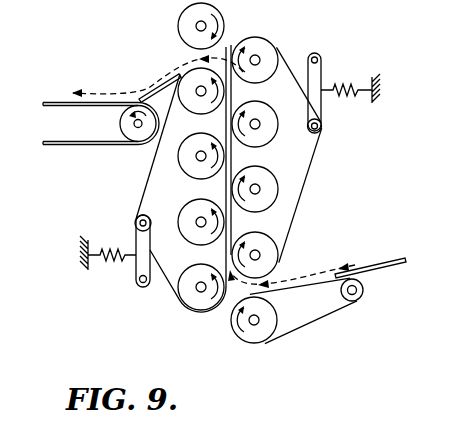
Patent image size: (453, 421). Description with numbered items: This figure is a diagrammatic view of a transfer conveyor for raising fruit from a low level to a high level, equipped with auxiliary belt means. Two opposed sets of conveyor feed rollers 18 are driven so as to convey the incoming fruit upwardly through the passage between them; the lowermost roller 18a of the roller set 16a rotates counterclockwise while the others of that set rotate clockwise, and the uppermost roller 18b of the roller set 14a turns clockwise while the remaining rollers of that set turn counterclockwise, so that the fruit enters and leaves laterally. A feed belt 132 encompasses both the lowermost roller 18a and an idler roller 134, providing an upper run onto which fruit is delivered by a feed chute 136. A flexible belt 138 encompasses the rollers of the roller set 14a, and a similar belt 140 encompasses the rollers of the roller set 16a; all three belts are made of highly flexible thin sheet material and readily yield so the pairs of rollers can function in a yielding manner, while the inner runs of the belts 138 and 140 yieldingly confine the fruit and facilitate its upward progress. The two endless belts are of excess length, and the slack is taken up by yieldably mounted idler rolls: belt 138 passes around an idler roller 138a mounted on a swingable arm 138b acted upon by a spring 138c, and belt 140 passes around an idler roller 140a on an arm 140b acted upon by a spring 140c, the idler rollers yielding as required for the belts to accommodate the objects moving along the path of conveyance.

The uppermost roller 18b is at (178, 31).
The roller set 16a is at (281, 38).
The roller set 14a is at (174, 158).
The flexible belt 138 is at (145, 185).
The idler roller 138a is at (137, 213).
The swingable arm 138b is at (134, 277).
The spring 138c is at (108, 266).
The flexible belt 140 is at (305, 181).
The idler roller 140a is at (321, 134).
The arm 140b is at (323, 110).
The spring 140c is at (343, 80).
The conveyor feed rollers 18 is at (263, 136).
The lowermost roller 18a is at (255, 338).
The idler roller 134 is at (363, 294).
The feed belt 132 is at (317, 318).
The feed chute 136 is at (380, 262).